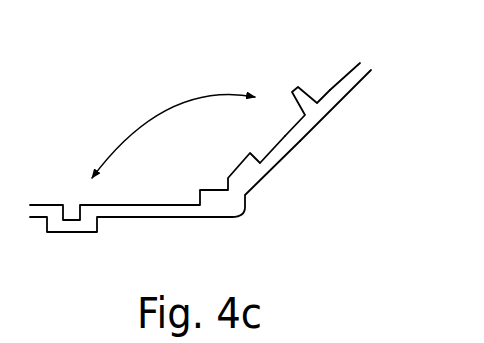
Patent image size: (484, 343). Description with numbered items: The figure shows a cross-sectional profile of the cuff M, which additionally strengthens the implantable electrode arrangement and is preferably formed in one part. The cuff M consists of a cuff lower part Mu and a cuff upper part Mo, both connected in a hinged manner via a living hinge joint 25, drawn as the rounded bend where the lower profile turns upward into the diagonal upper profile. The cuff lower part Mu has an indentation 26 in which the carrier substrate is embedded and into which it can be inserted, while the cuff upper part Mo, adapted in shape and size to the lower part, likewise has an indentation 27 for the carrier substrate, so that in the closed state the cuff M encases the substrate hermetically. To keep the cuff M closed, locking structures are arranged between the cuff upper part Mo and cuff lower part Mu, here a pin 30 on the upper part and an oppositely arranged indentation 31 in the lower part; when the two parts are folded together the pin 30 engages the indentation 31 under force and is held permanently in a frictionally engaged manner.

The living hinge joint 25 is at (228, 206).
The indentation 26 is at (159, 189).
The indentation 27 is at (273, 131).
The pin 30 is at (307, 103).
The indentation 31 is at (72, 215).
The cuff lower part Mu is at (145, 216).
The cuff upper part Mo is at (355, 85).
The cuff M is at (483, 331).